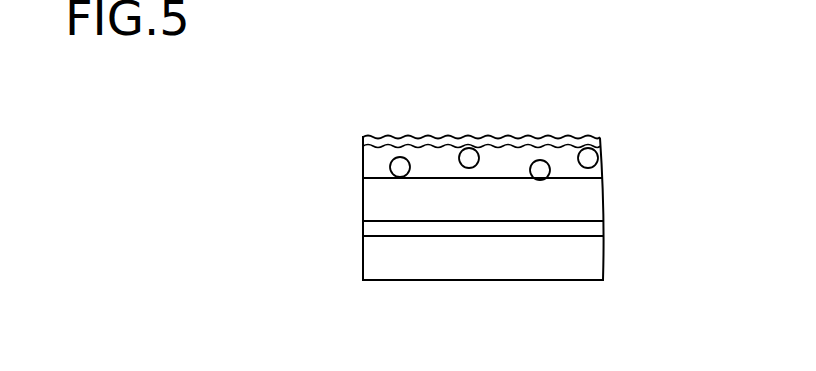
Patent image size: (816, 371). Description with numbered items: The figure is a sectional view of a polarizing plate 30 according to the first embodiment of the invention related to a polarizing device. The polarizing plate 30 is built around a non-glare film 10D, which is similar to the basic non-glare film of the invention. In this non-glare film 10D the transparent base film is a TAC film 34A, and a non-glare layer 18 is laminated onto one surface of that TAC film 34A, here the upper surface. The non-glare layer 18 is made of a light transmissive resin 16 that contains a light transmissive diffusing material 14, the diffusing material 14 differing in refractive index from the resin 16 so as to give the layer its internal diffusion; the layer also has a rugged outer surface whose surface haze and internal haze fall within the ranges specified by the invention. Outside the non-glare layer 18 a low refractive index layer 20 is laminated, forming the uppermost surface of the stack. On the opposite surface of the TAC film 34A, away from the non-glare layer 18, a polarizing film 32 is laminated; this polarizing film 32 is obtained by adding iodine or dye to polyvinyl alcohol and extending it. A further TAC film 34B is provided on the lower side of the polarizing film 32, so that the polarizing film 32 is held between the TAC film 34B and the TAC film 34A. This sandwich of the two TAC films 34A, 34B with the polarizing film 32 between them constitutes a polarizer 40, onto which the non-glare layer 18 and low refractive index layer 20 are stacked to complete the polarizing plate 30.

The polarizing plate 30 is at (346, 116).
The low refractive index layer 20 is at (580, 137).
The light transmissive diffusing material 14 is at (590, 156).
The light transmissive resin 16 is at (595, 175).
The non-glare layer 18 is at (687, 138).
The TAC film 34A is at (596, 212).
The polarizing film 32 is at (596, 231).
The TAC film 34B is at (596, 258).
The polarizer 40 is at (710, 210).
The non-glare film 10D is at (345, 137).